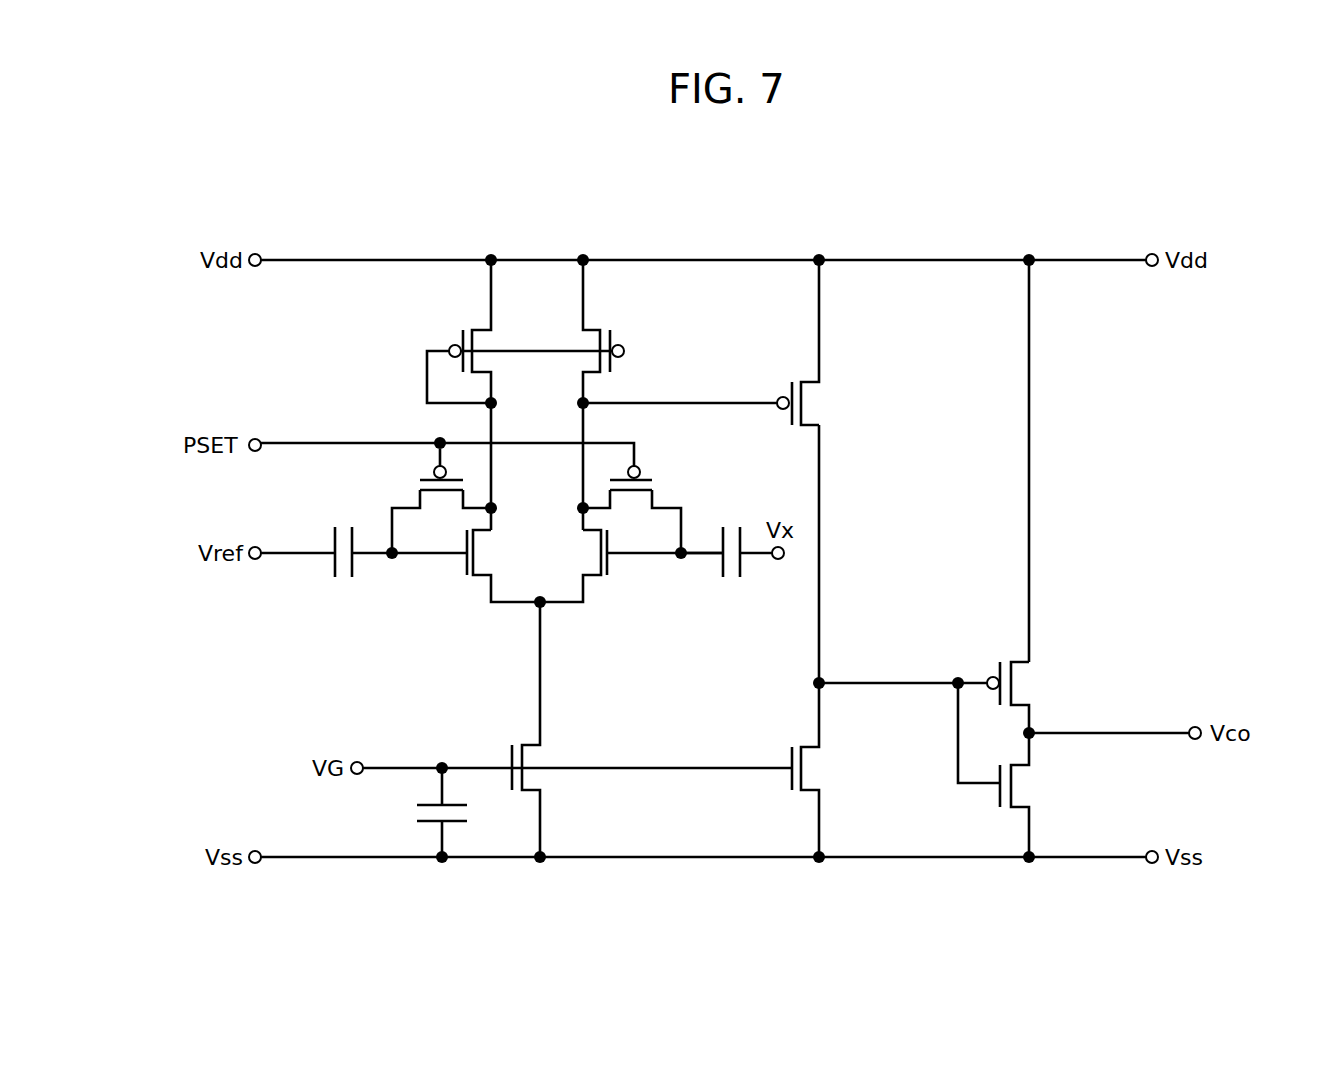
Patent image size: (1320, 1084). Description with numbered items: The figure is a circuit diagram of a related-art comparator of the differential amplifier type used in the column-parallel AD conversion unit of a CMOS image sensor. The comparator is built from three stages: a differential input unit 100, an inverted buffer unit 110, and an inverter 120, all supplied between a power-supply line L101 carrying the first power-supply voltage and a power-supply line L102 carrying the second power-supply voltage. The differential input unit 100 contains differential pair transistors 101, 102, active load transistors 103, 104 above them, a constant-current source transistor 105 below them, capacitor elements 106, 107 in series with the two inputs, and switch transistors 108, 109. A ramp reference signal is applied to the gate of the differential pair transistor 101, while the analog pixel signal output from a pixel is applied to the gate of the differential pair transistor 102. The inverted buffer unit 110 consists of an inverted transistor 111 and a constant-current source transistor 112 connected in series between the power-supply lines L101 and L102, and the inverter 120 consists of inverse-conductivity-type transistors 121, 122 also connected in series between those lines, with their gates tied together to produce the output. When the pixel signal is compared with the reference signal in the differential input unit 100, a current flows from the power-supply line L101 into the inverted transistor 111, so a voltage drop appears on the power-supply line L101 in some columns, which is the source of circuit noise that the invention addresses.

The differential input unit 100 is at (622, 222).
The inverted buffer unit 110 is at (913, 222).
The inverter 120 is at (1081, 588).
The power-supply line L101 is at (360, 257).
The power-supply line L102 is at (657, 868).
The differential pair transistor 101 is at (483, 553).
The differential pair transistor 102 is at (590, 562).
The active load transistor 103 is at (484, 362).
The active load transistor 104 is at (608, 364).
The constant-current source transistor 105 is at (531, 776).
The capacitor element 106 is at (345, 580).
The capacitor element 107 is at (733, 578).
The switch transistor 108 is at (426, 500).
The switch transistor 109 is at (648, 502).
The inverted transistor 111 is at (805, 403).
The constant-current source transistor 112 is at (807, 768).
The inverse-conductivity-type transistor 121 is at (1016, 683).
The inverse-conductivity-type transistor 122 is at (1016, 783).